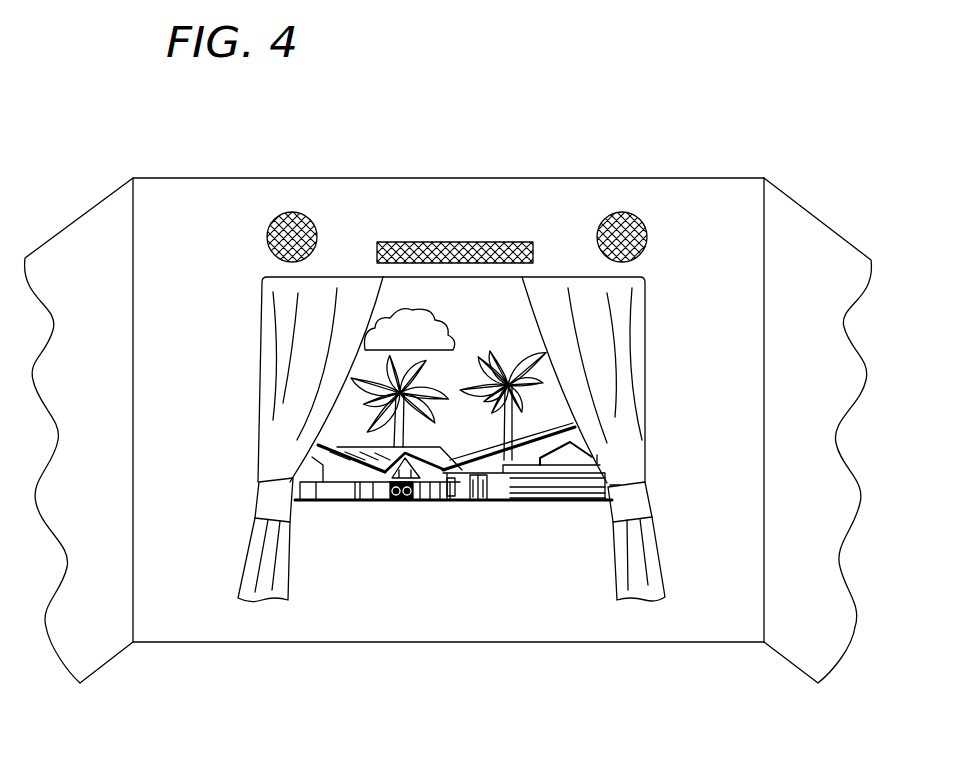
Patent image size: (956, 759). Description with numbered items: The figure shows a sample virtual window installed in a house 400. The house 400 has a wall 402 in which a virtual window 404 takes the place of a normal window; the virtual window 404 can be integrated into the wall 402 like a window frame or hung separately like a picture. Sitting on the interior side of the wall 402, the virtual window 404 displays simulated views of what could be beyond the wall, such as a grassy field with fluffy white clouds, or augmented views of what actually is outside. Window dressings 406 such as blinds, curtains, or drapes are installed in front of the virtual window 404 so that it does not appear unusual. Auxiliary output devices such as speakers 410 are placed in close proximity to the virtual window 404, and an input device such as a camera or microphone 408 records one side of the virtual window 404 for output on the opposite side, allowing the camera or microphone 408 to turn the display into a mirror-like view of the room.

The house 400 is at (435, 143).
The wall 402 is at (442, 617).
The virtual window 404 is at (465, 500).
The window dressings 406 is at (265, 357).
The camera or microphone 408 is at (455, 242).
The speakers 410 is at (292, 212).